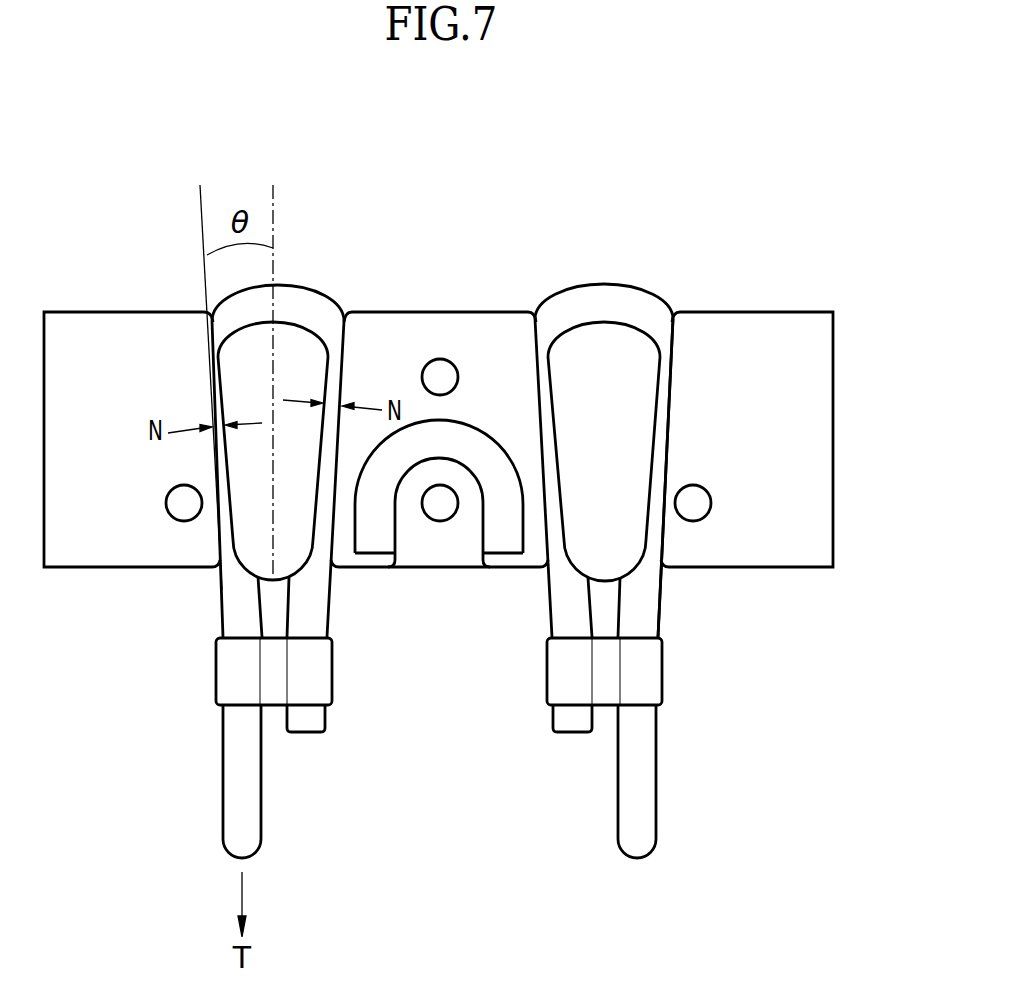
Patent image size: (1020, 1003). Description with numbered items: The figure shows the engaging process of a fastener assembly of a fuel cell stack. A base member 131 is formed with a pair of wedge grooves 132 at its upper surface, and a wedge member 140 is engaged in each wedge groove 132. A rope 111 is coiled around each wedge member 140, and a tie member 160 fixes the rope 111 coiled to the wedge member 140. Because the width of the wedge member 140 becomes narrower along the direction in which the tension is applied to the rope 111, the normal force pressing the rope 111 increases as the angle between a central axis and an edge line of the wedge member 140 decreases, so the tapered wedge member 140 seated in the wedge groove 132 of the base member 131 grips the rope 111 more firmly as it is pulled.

The rope 111 is at (647, 773).
The base member 131 is at (820, 440).
The wedge groove 132 is at (663, 437).
The wedge member 140 is at (726, 426).
The tie member 160 is at (648, 673).